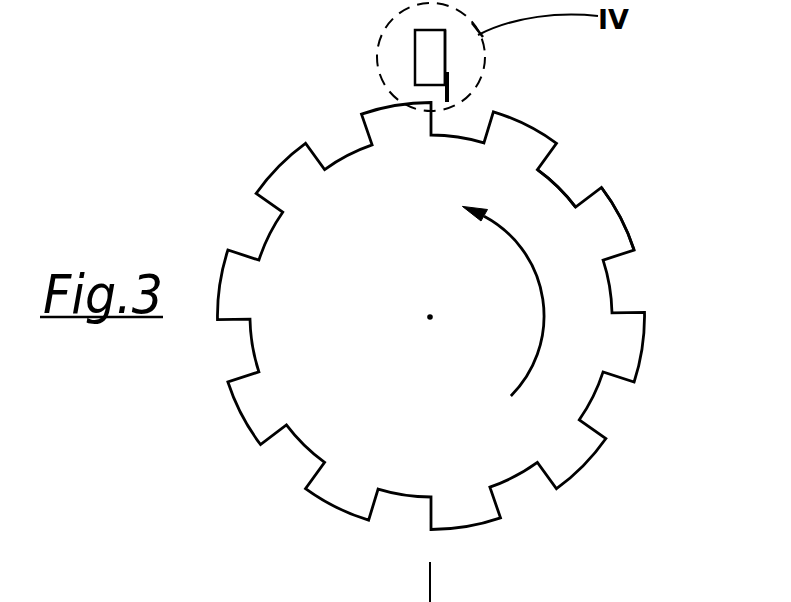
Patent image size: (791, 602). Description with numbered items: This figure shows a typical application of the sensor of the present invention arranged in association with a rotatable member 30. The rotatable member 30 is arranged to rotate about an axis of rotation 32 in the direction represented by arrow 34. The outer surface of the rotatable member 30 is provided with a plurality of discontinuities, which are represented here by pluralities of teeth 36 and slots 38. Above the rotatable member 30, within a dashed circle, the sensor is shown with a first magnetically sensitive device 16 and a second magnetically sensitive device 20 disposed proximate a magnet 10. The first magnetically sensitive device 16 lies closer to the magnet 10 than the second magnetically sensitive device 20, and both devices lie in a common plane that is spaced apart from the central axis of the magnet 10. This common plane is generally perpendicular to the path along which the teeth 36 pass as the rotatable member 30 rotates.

The magnet 10 is at (415, 47).
The first magnetically sensitive device 16 is at (447, 85).
The second magnetically sensitive device 20 is at (447, 97).
The rotatable member 30 is at (376, 381).
The axis of rotation 32 is at (433, 320).
The arrow 34 is at (542, 312).
The teeth 36 is at (618, 217).
The slots 38 is at (553, 182).